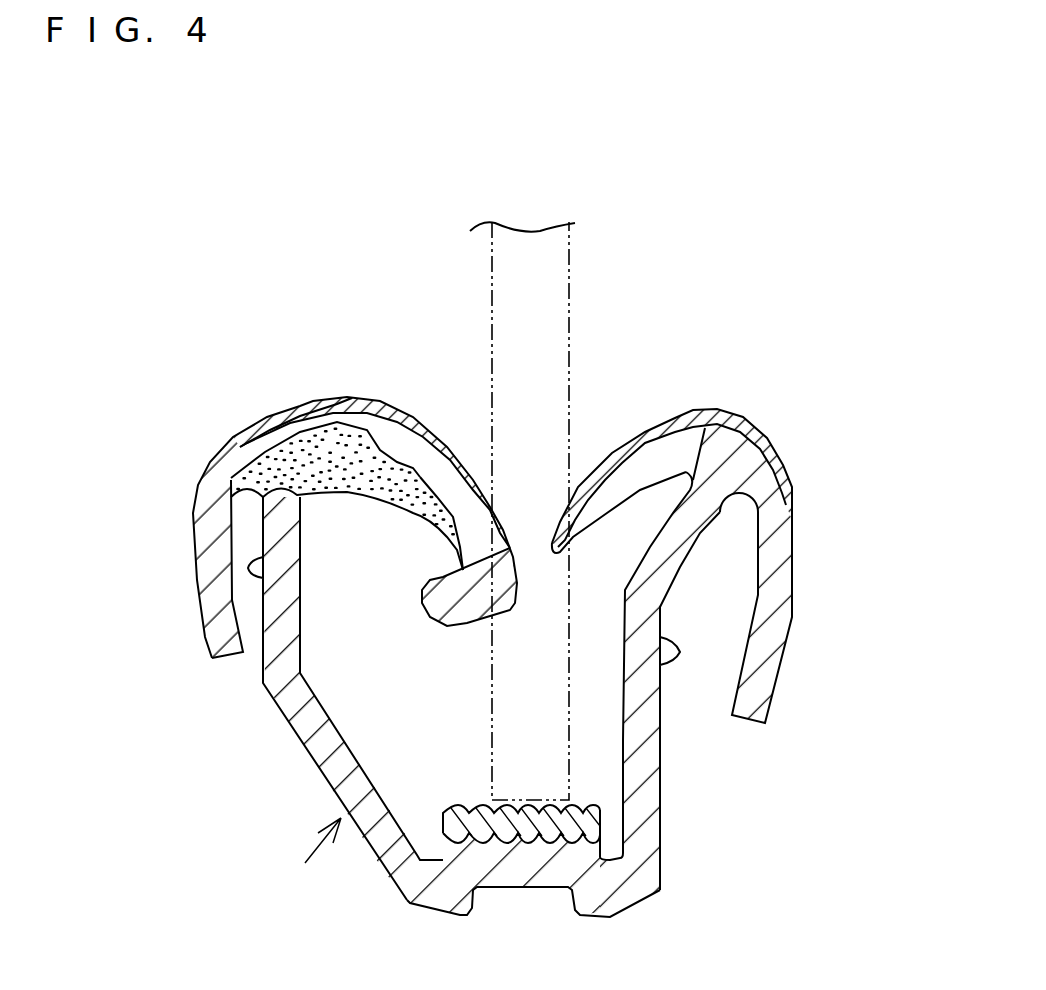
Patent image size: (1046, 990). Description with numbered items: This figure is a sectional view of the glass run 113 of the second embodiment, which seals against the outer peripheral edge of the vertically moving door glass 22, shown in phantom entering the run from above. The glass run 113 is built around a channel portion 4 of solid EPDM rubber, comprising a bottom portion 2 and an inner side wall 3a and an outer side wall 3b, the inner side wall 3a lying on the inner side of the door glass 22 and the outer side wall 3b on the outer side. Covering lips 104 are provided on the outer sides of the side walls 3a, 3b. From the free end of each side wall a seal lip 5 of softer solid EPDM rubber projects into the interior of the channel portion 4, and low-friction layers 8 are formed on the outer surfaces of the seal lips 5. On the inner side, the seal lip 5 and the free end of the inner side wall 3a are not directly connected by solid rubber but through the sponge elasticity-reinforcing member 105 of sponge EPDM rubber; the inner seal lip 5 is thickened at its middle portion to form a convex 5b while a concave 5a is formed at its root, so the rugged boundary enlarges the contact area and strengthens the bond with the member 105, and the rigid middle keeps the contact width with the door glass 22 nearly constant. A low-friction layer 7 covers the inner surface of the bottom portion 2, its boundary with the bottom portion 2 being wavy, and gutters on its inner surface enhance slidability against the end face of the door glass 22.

The bottom portion 2 is at (525, 870).
The inner side wall 3a is at (270, 633).
The outer side wall 3b is at (645, 805).
The channel portion 4 is at (638, 617).
The seal lip 5 is at (600, 510).
The concave 5a is at (337, 424).
The convex 5b is at (418, 478).
The low-friction layer 7 is at (471, 808).
The low-friction layer 8 is at (630, 447).
The door glass 22 is at (569, 297).
The covering lip 104 is at (855, 571).
The sponge elasticity-reinforcing member 105 is at (315, 493).
The glass run 113 is at (283, 858).